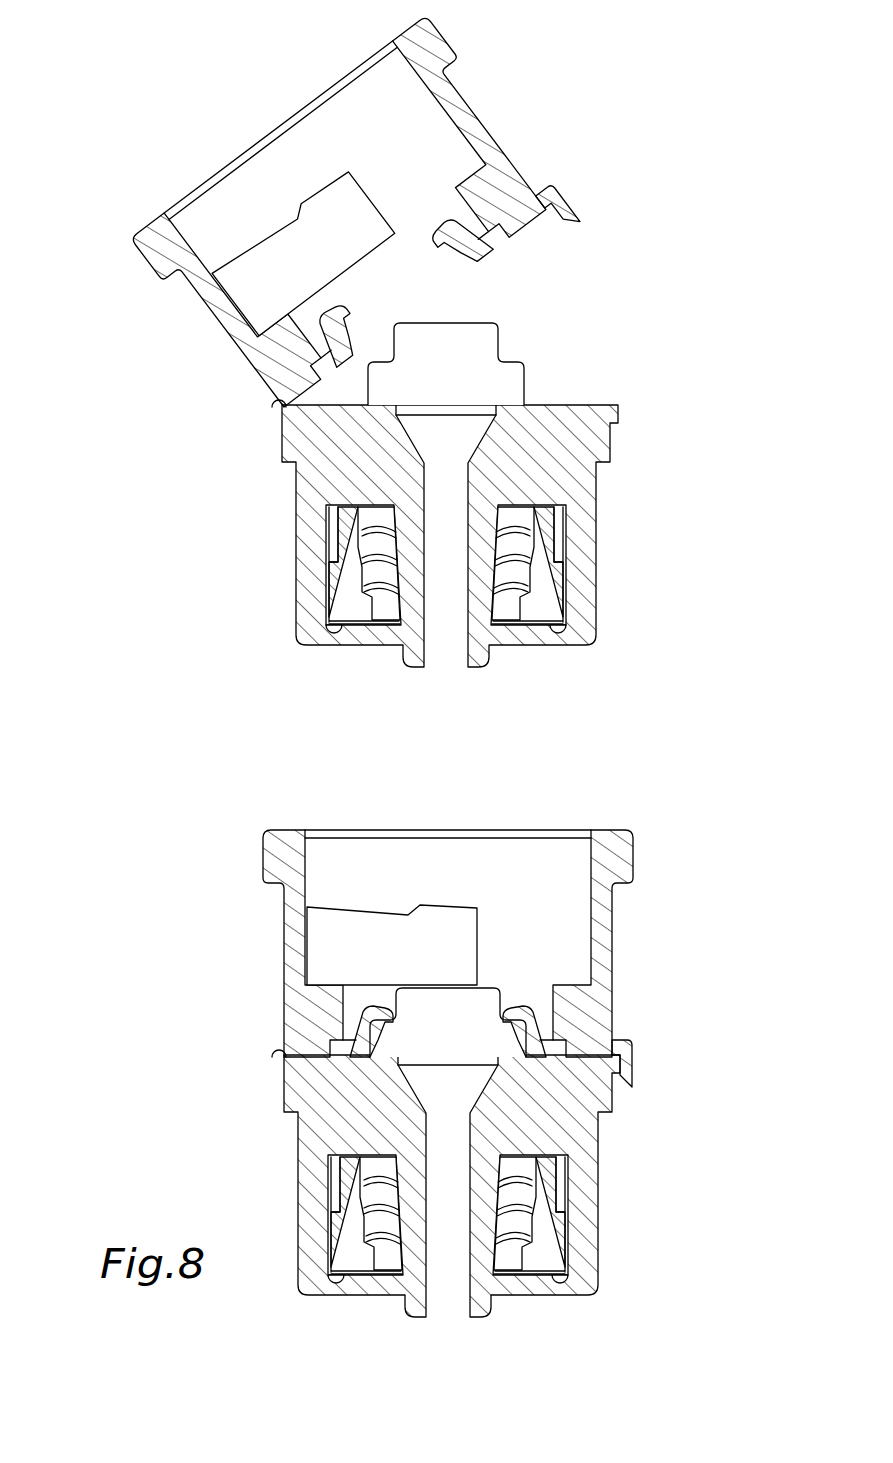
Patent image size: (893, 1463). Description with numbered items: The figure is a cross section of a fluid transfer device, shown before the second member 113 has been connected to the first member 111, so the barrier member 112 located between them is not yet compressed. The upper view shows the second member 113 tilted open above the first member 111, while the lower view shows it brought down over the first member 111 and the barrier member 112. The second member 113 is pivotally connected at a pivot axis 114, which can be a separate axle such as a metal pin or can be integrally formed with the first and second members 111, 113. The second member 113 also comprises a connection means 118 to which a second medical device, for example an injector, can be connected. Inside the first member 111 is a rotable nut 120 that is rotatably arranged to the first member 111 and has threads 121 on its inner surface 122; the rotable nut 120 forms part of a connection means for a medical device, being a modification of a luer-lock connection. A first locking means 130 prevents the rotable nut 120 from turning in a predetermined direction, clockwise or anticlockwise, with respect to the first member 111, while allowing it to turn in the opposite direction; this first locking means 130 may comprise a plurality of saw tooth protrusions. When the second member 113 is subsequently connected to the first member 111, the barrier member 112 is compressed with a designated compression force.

The first member 111 is at (616, 369).
The barrier member 112 is at (462, 358).
The second member 113 is at (146, 177).
The pivot axis 114 is at (272, 406).
The connection means 118 is at (562, 204).
The rotable nut 120 is at (552, 603).
The threads 121 is at (350, 603).
The inner surface 122 is at (508, 604).
The first locking means 130 is at (346, 508).